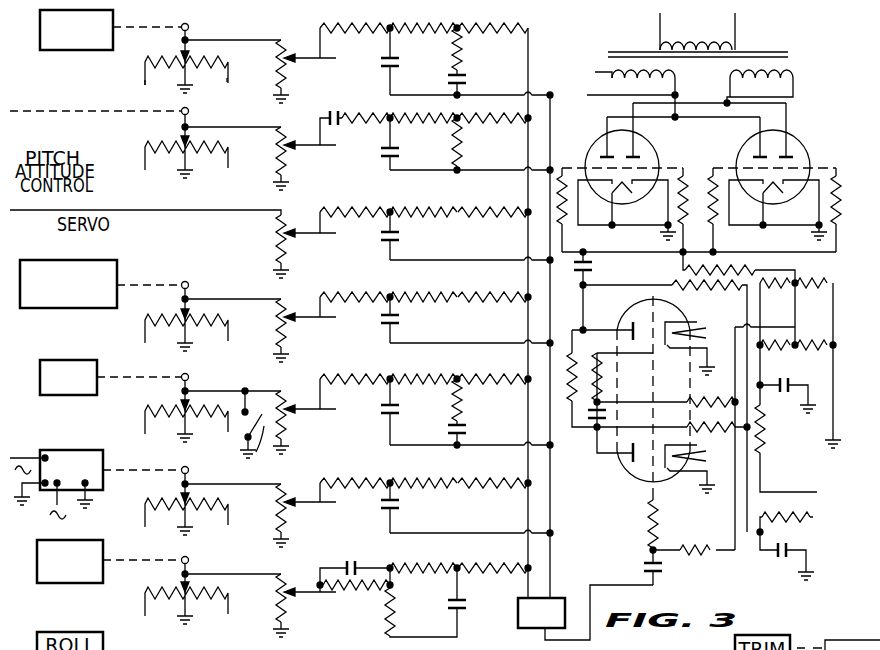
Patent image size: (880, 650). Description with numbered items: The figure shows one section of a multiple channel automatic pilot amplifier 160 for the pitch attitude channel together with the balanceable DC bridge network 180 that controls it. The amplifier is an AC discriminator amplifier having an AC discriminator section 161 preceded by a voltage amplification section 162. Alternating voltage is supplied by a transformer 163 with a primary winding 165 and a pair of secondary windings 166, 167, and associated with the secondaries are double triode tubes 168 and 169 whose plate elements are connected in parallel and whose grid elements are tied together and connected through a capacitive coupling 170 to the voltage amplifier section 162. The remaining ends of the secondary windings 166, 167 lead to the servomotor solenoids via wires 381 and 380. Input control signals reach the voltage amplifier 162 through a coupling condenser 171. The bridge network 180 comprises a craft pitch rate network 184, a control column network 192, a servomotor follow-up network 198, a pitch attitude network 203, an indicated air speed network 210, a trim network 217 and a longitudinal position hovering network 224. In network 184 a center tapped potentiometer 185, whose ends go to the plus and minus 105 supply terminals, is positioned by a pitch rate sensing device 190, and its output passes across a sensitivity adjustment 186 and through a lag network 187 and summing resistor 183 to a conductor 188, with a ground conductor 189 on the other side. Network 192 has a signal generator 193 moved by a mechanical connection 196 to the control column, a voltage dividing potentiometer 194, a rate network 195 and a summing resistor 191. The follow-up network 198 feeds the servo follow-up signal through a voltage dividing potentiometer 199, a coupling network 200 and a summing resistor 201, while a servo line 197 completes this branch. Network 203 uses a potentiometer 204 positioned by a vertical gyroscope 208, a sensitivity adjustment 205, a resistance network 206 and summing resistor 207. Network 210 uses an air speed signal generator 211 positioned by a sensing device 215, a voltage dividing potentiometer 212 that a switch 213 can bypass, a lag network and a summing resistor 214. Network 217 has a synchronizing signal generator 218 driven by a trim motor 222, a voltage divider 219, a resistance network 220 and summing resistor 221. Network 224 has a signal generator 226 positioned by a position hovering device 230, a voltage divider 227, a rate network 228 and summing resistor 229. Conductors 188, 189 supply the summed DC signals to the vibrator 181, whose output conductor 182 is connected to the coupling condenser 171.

The angular pitch rate sensing device 190 is at (113, 20).
The center tapped potentiometer 185 is at (195, 34).
The voltage supply terminals 105 is at (227, 78).
The mechanical connection 196 is at (48, 113).
The signal generator 193 is at (175, 138).
The servo feedback line 197 is at (196, 212).
The balanceable DC bridge network 180 is at (230, 260).
The pitch attitude sensing device 208 is at (117, 270).
The potentiometer 204 is at (175, 308).
The sensing device 215 is at (73, 396).
The indicated air speed signal generator 211 is at (176, 408).
The single pole single throw switch 213 is at (440, 428).
The trim or synchronizing motor 222 is at (52, 450).
The synchronizing signal generator 218 is at (175, 493).
The position hovering device 230 is at (101, 540).
The voltage signal generator 226 is at (177, 585).
The craft pitch rate network 184 is at (312, 34).
The voltage dividing potentiometer 186 is at (308, 63).
The control column network 192 is at (311, 120).
The voltage dividing potentiometer 194 is at (299, 160).
The servomotor follow-up network 198 is at (311, 216).
The voltage dividing potentiometer 199 is at (303, 248).
The pitch attitude network 203 is at (317, 301).
The voltage dividing potentiometer 205 is at (299, 328).
The indicated air speed network 210 is at (308, 383).
The voltage dividing potentiometer 212 is at (302, 427).
The trim network 217 is at (312, 486).
The voltage dividing potentiometer 219 is at (302, 515).
The longitudinal position hovering network 224 is at (318, 569).
The voltage dividing potentiometer 227 is at (302, 608).
The lag network 187 is at (504, 66).
The rate network 195 is at (437, 151).
The summing resistor 191 is at (496, 120).
The coupling network 200 is at (487, 250).
The summing resistor 201 is at (498, 212).
The resistance network 206 is at (447, 331).
The summing resistor 207 is at (500, 299).
The summing resistor 214 is at (508, 381).
The resistance network 220 is at (445, 524).
The summing resistor 221 is at (498, 485).
The rate network 228 is at (440, 610).
The summing resistor 229 is at (500, 570).
The summing resistor 183 is at (508, 30).
The conductor 188 is at (528, 66).
The ground conductor 189 is at (555, 87).
The vibrator 181 is at (563, 598).
The output conductor 182 is at (540, 637).
The primary winding 165 is at (716, 33).
The transformer 163 is at (722, 94).
The secondary winding 167 is at (655, 88).
The wire 381 is at (595, 72).
The secondary winding 166 is at (796, 71).
The amplifier 160 is at (842, 105).
The wire 380 is at (587, 95).
The double triode tube 168 is at (590, 159).
The double triode tube 169 is at (804, 152).
The AC discriminator section 161 is at (725, 152).
The capacitive coupling 170 is at (592, 270).
The voltage amplification section 162 is at (604, 495).
The coupling condenser 171 is at (648, 570).